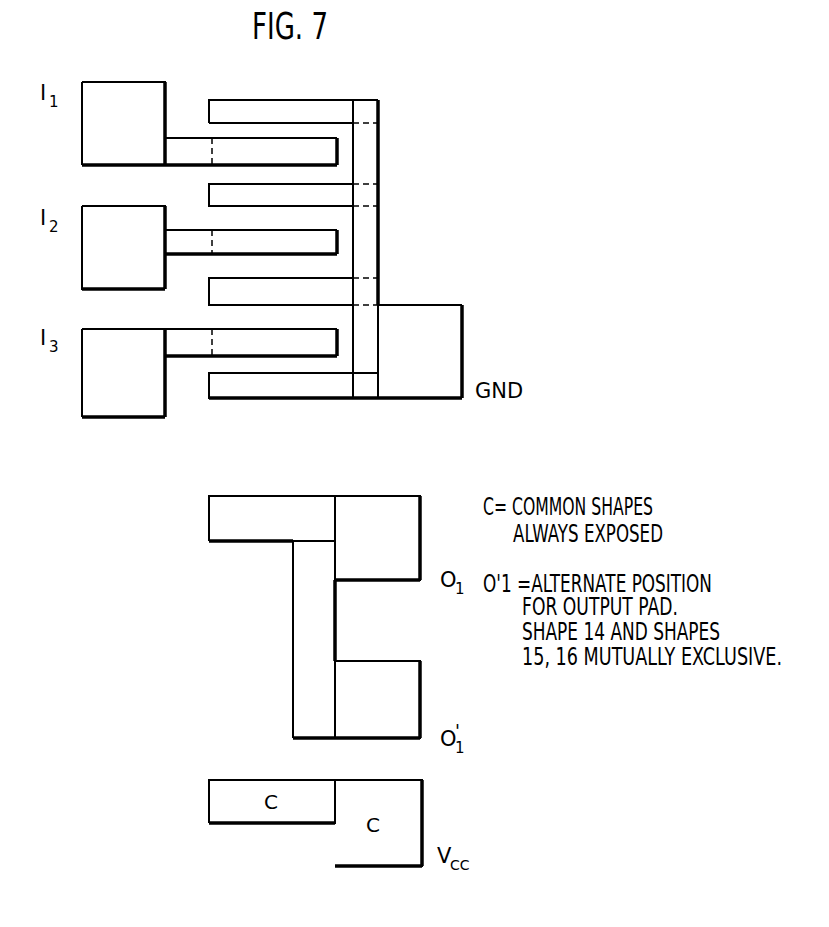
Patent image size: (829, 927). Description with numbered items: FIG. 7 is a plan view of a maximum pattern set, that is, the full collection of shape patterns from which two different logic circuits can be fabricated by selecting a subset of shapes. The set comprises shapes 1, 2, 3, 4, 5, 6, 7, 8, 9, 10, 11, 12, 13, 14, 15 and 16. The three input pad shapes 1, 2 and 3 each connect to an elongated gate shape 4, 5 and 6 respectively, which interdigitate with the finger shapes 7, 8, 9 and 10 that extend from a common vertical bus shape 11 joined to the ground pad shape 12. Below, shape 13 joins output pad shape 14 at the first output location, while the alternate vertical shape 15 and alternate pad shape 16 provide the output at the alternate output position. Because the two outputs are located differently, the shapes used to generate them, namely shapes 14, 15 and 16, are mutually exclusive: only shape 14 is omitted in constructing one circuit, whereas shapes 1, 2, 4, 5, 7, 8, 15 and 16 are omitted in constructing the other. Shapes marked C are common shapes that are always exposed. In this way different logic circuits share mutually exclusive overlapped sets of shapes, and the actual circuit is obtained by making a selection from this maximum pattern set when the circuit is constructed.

The shape 1 is at (123, 123).
The shape 2 is at (123, 247).
The shape 3 is at (123, 373).
The shape 4 is at (225, 163).
The shape 5 is at (228, 248).
The shape 6 is at (228, 348).
The shape 7 is at (260, 112).
The shape 8 is at (225, 195).
The shape 9 is at (222, 295).
The shape 10 is at (285, 392).
The shape 11 is at (372, 262).
The shape 12 is at (420, 351).
The shape 13 is at (272, 518).
The shape 14 is at (377, 538).
The shape 15 is at (314, 617).
The shape 16 is at (356, 699).